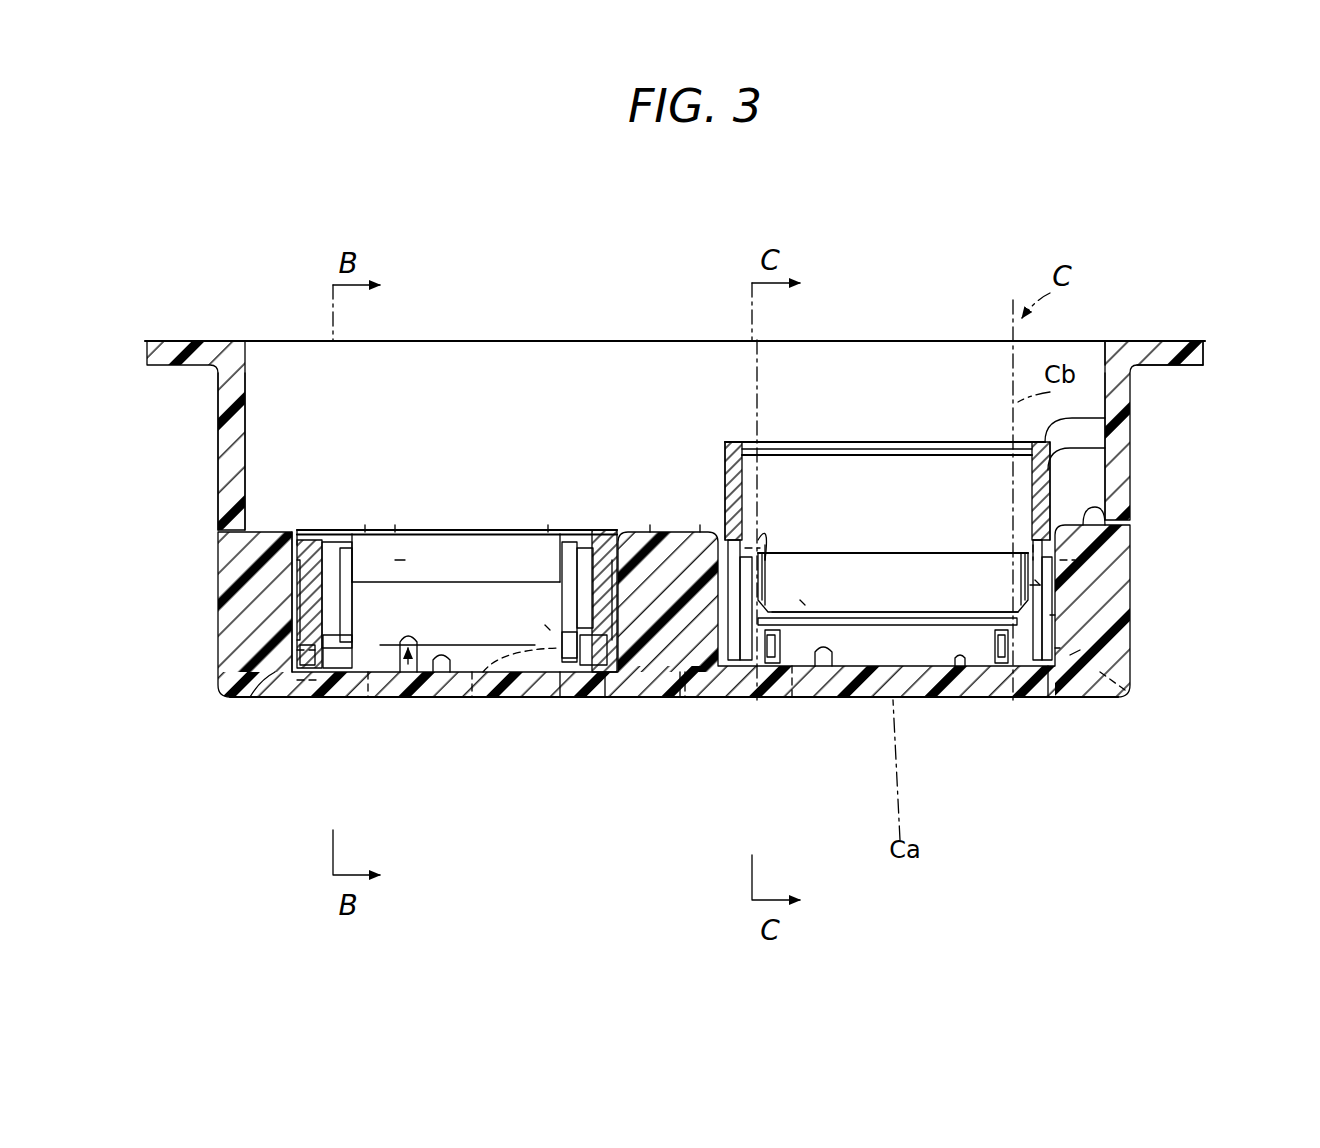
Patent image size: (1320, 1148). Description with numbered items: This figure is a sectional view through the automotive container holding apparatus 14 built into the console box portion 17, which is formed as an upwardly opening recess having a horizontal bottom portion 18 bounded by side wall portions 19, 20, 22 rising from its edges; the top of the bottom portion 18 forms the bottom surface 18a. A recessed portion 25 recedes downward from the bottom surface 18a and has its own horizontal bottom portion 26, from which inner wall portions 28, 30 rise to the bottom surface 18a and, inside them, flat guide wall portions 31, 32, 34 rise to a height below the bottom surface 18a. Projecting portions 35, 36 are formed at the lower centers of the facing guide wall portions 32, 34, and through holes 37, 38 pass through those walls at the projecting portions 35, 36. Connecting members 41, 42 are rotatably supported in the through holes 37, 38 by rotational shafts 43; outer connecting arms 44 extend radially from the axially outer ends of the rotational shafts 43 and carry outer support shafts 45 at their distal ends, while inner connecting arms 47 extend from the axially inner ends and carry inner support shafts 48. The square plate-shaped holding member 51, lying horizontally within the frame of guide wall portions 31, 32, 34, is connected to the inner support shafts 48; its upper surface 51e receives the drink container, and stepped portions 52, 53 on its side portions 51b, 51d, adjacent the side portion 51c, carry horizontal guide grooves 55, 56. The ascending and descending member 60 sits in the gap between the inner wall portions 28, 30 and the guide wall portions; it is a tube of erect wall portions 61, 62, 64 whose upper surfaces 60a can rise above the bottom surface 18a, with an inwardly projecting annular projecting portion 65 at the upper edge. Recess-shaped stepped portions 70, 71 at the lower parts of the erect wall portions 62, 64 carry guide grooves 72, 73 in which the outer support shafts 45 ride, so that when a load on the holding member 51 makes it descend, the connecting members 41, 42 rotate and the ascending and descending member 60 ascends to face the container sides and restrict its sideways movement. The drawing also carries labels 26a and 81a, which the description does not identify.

The automotive container holding apparatus 14 is at (268, 218).
The console box portion 17 is at (1192, 335).
The bottom portion 18 is at (265, 535).
The bottom surface 18a is at (1105, 510).
The side wall portion 19 is at (612, 352).
The side wall portion 20 is at (1100, 358).
The side wall portion 22 is at (244, 368).
The recessed portion 25 is at (322, 540).
The bottom portion 26 is at (410, 700).
The opening 26a is at (432, 700).
The inner wall portion 28 is at (605, 700).
The inner wall portion 30 is at (300, 605).
The guide wall portion 31 is at (870, 465).
The guide wall portion 32 is at (650, 525).
The guide wall portion 34 is at (300, 630).
The projecting portion 35 is at (535, 700).
The projecting portion 36 is at (340, 700).
The through hole 37 is at (472, 700).
The through hole 38 is at (368, 700).
The connecting member 41 is at (510, 540).
The connecting member 42 is at (400, 560).
The rotational shaft 43 is at (680, 700).
The outer connecting arm 44 is at (250, 700).
The outer support shaft 45 is at (290, 660).
The inner connecting arm 47 is at (395, 525).
The inner support shaft 48 is at (365, 525).
The holding member 51 is at (445, 524).
The side portion 51b is at (601, 525).
The side portion 51c is at (470, 525).
The side portion 51d is at (318, 525).
The upper surface 51e is at (425, 525).
The stepped portion 52 is at (578, 525).
The stepped portion 53 is at (337, 525).
The guide groove 55 is at (548, 525).
The guide groove 56 is at (300, 590).
The ascending and descending member 60 is at (615, 520).
The upper surface 60a is at (297, 530).
The erect wall portion 61 is at (893, 445).
The erect wall portion 62 is at (643, 527).
The erect wall portion 64 is at (300, 570).
The annular projecting portion 65 is at (1035, 445).
The stepped portion 70 is at (545, 625).
The stepped portion 71 is at (305, 700).
The guide groove 72 is at (578, 690).
The guide groove 73 is at (295, 685).
The flange portion 81a is at (1155, 340).